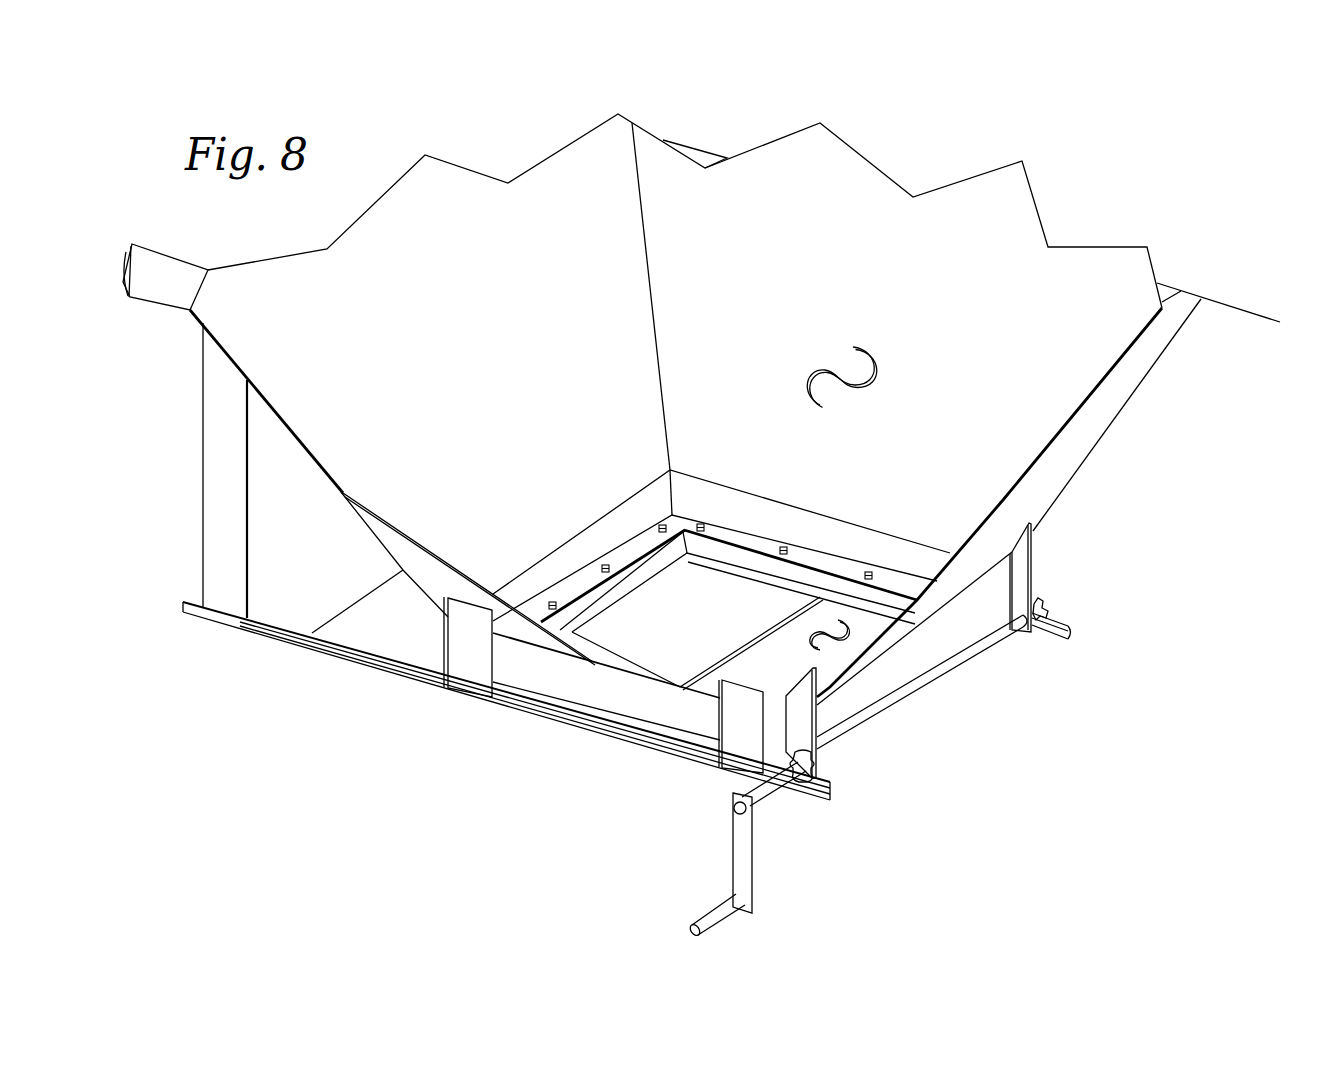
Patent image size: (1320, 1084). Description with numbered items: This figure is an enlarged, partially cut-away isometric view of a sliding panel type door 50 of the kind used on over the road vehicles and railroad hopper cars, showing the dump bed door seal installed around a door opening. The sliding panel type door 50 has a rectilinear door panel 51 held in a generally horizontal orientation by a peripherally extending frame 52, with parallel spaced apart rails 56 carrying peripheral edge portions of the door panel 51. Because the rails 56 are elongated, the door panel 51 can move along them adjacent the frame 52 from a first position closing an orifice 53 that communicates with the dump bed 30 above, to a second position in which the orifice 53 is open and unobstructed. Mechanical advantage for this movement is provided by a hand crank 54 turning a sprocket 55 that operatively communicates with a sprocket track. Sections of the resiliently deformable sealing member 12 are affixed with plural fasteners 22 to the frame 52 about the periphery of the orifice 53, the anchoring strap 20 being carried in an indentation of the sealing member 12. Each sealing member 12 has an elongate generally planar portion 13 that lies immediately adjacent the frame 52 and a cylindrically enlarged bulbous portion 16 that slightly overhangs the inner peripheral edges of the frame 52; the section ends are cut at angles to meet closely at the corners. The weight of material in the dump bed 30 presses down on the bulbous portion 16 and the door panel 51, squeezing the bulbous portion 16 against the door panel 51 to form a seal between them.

The sealing member 12 is at (712, 592).
The planar portion 13 is at (657, 562).
The bulbous portion 16 is at (590, 603).
The anchoring strap 20 is at (537, 610).
The fasteners 22 is at (664, 524).
The dump bed 30 is at (840, 372).
The sliding panel type door 50 is at (661, 778).
The door panel 51 is at (375, 625).
The frame 52 is at (522, 665).
The orifice 53 is at (835, 647).
The hand crank 54 is at (743, 873).
The sprocket 55 is at (1047, 612).
The rails 56 is at (272, 635).